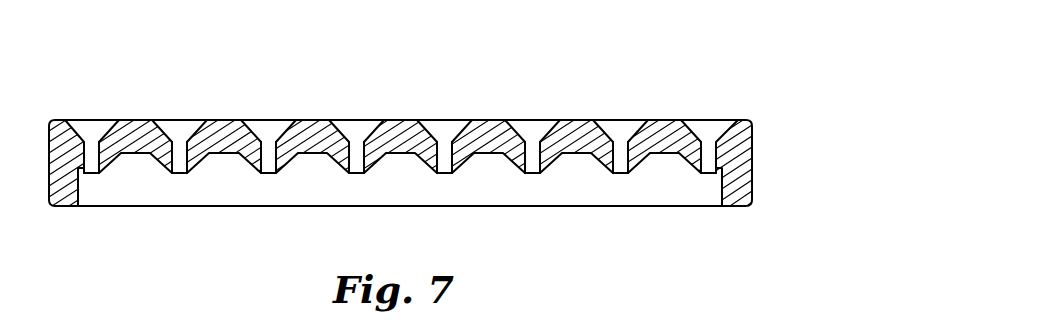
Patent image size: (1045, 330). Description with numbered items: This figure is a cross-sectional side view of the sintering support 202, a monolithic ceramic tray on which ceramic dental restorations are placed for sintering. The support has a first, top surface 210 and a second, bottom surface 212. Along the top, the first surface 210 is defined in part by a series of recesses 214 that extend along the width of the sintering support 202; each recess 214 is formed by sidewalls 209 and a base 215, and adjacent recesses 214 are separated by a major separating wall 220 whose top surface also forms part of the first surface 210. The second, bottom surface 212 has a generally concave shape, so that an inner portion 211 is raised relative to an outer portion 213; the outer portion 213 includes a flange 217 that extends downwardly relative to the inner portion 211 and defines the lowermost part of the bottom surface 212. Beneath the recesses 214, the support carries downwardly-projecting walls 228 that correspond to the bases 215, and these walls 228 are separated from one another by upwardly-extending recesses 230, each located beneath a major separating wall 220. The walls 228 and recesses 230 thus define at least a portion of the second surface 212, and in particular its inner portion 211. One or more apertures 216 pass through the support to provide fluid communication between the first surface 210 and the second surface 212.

The sintering support 202 is at (642, 77).
The sidewalls 209 is at (278, 120).
The first, top surface 210 is at (55, 120).
The inner portion 211 is at (628, 223).
The second, bottom surface 212 is at (132, 155).
The outer portion 213 is at (690, 210).
The recesses 214 is at (520, 120).
The base 215 is at (183, 120).
The apertures 216 is at (615, 158).
The flange 217 is at (747, 152).
The major separating wall 220 is at (402, 120).
The downwardly-projecting walls 228 is at (257, 172).
The upwardly-extending recesses 230 is at (480, 162).